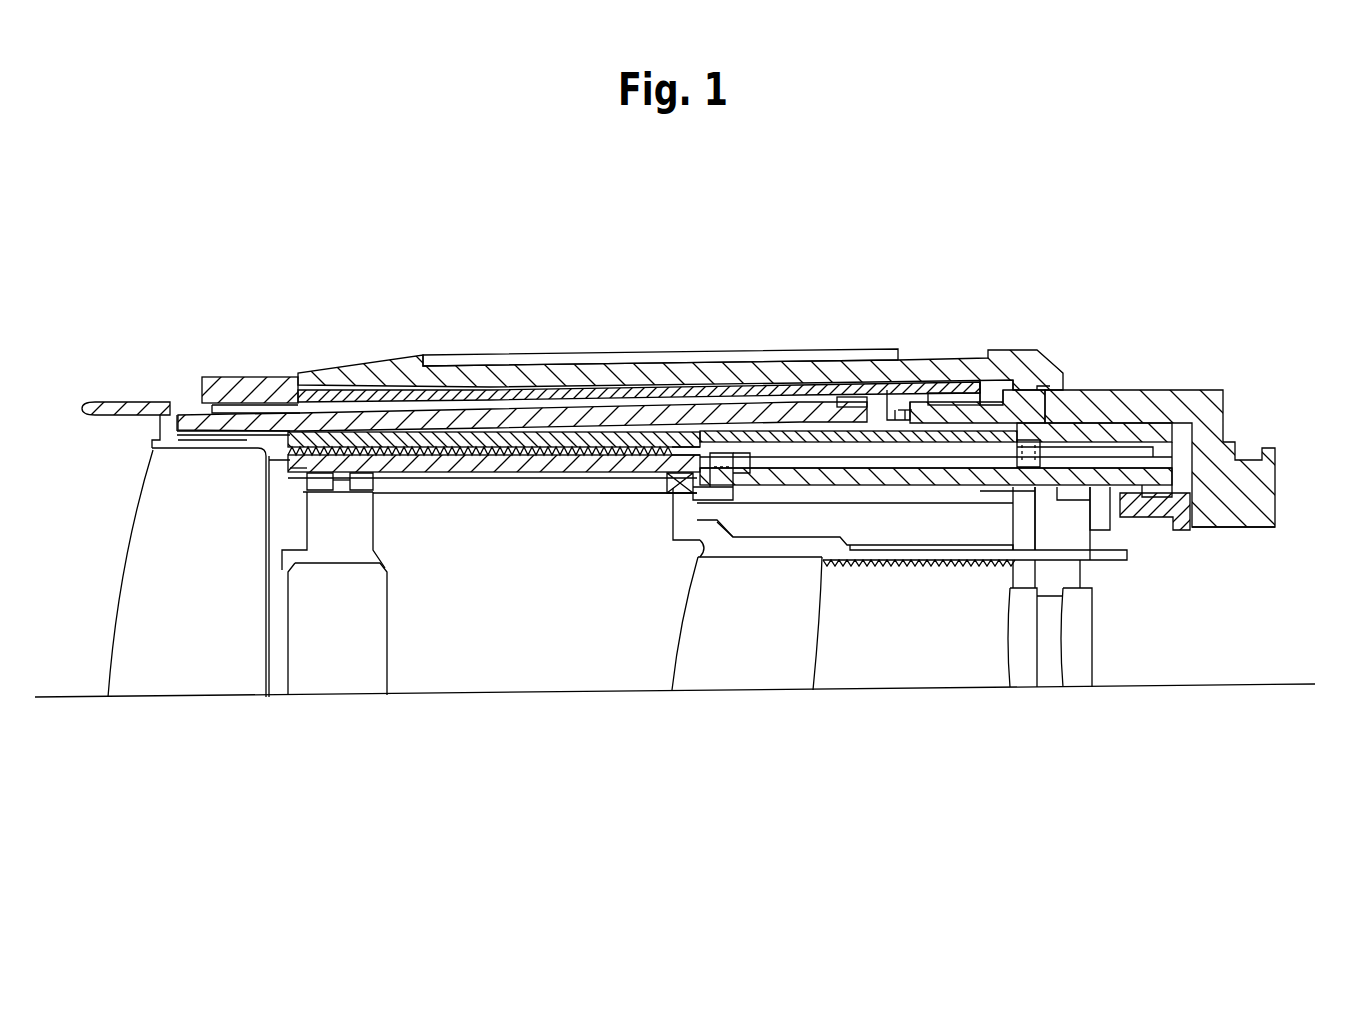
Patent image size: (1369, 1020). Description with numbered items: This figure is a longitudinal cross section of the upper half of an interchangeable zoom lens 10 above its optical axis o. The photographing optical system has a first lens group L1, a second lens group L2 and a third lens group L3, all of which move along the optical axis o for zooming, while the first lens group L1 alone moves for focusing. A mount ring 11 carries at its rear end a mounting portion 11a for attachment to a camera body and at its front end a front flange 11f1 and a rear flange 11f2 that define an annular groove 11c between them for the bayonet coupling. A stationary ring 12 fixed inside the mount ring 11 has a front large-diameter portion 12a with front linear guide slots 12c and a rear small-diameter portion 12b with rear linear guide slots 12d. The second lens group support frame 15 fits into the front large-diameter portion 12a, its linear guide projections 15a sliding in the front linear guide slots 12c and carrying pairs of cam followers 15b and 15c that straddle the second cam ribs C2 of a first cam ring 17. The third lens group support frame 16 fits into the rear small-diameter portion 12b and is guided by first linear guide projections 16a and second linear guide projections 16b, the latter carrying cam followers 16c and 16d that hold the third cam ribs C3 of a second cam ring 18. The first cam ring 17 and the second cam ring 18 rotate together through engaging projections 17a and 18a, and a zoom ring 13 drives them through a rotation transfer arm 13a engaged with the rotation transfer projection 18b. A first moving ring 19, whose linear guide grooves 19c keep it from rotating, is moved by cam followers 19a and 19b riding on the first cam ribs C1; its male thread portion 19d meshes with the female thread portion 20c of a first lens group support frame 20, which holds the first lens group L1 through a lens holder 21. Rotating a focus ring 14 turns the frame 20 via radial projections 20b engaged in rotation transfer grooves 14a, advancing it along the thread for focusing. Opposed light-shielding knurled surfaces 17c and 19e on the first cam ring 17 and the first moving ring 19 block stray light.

The zoom lens 10 is at (1096, 146).
The mount ring 11 is at (1122, 391).
The mounting portion 11a is at (1262, 514).
The annular groove 11c is at (910, 412).
The front flange 11f1 is at (900, 412).
The rear flange 11f2 is at (920, 412).
The stationary ring 12 is at (697, 568).
The front large-diameter portion 12a is at (290, 468).
The rear small-diameter portion 12b is at (1160, 517).
The front linear guide slots 12c is at (588, 487).
The rear linear guide slots 12d is at (930, 511).
The zoom ring 13 is at (405, 372).
The rotation transfer arm 13a is at (1063, 385).
The focus ring 14 is at (247, 384).
The rotation transfer grooves 14a is at (700, 386).
The second lens group support frame 15 is at (368, 527).
The linear guide projections 15a is at (372, 508).
The cam follower 15b is at (323, 481).
The cam follower 15c is at (360, 441).
The third lens group support frame 16 is at (902, 561).
The first linear guide projections 16a is at (660, 490).
The second linear guide projections 16b is at (1100, 520).
The cam follower 16c is at (1037, 488).
The cam follower 16d is at (1090, 497).
The first cam ring 17 is at (647, 472).
The engaging projections 17a is at (782, 378).
The light-shielding knurled surface 17c is at (494, 354).
The second cam ring 18 is at (813, 483).
The engaging projections 18a is at (730, 433).
The rotation transfer projection 18b is at (1028, 487).
The first moving ring 19 is at (1091, 442).
The cam follower 19a is at (976, 395).
The cam follower 19b is at (1190, 422).
The linear guide grooves 19c is at (927, 443).
The male thread portion 19d is at (522, 372).
The light-shielding knurled surface 19e is at (572, 446).
The first lens group support frame 20 is at (172, 410).
The radial projections 20b is at (850, 398).
The female thread portion 20c is at (327, 431).
The lens holder 21 is at (176, 449).
The first cam ribs C1 is at (1145, 460).
The second cam ribs C2 is at (342, 491).
The third cam ribs C3 is at (1090, 548).
The first lens group L1 is at (172, 658).
The second lens group L2 is at (318, 678).
The third lens group L3 is at (1090, 710).
The optical axis o is at (493, 693).